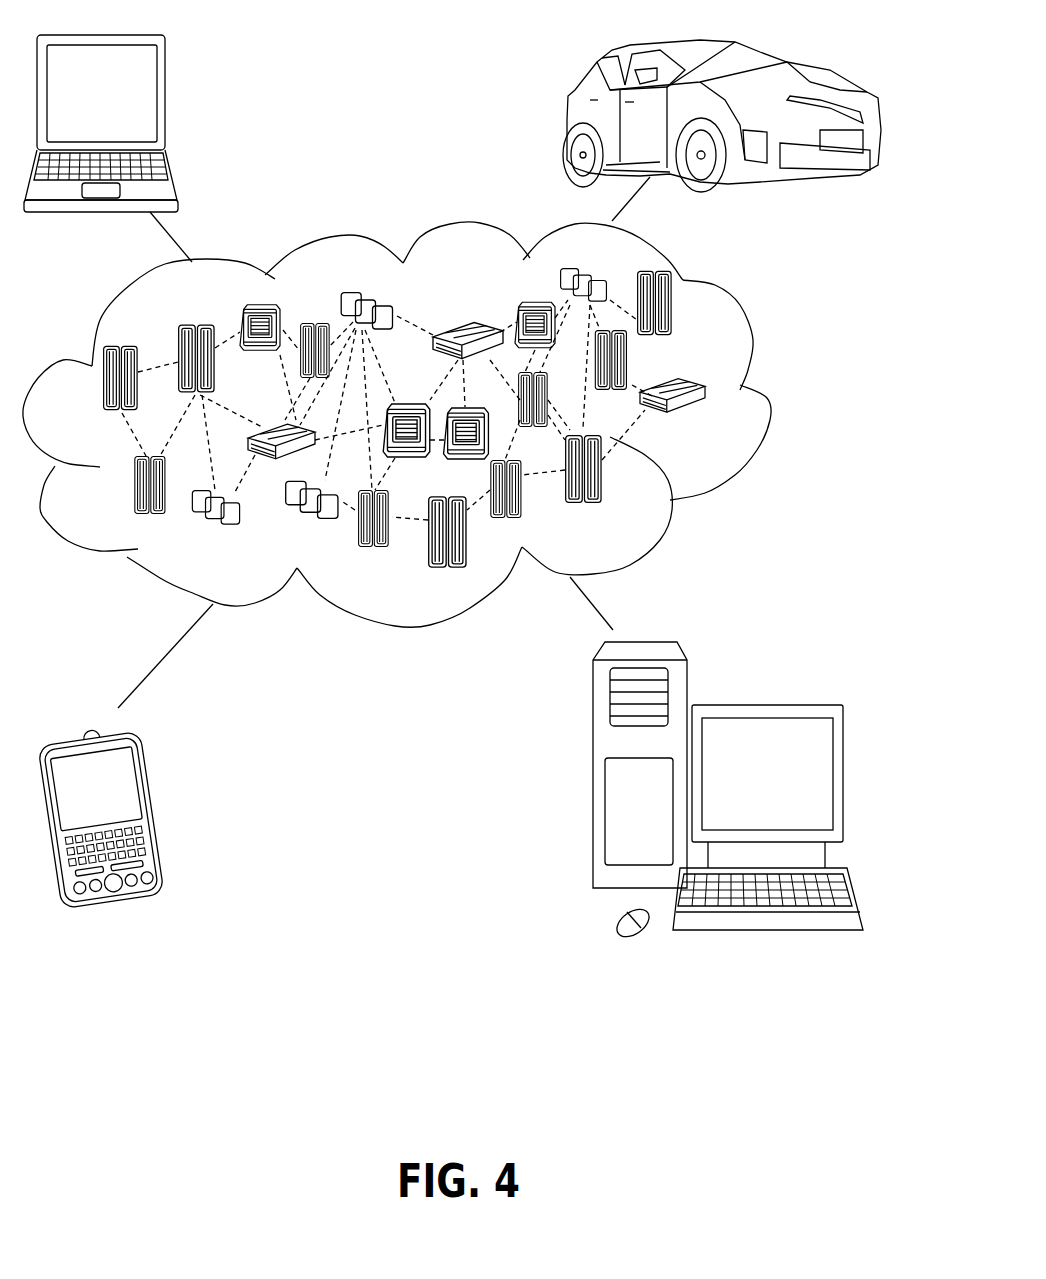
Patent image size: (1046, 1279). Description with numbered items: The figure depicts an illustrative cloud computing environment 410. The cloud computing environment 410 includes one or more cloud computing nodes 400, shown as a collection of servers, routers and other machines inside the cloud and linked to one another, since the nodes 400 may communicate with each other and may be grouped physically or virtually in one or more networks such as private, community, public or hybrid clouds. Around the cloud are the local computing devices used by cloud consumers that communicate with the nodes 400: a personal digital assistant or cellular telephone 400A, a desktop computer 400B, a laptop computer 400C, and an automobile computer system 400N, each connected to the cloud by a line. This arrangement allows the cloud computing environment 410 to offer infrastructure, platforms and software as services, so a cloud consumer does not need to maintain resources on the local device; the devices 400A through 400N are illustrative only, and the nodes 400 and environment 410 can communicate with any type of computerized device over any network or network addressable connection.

The cloud computing nodes 400 is at (710, 424).
The cloud computing environment 410 is at (765, 392).
The personal digital assistant (PDA) or cellular telephone 400A is at (153, 803).
The desktop computer 400B is at (763, 705).
The laptop computer 400C is at (167, 100).
The automobile computer system 400N is at (563, 120).